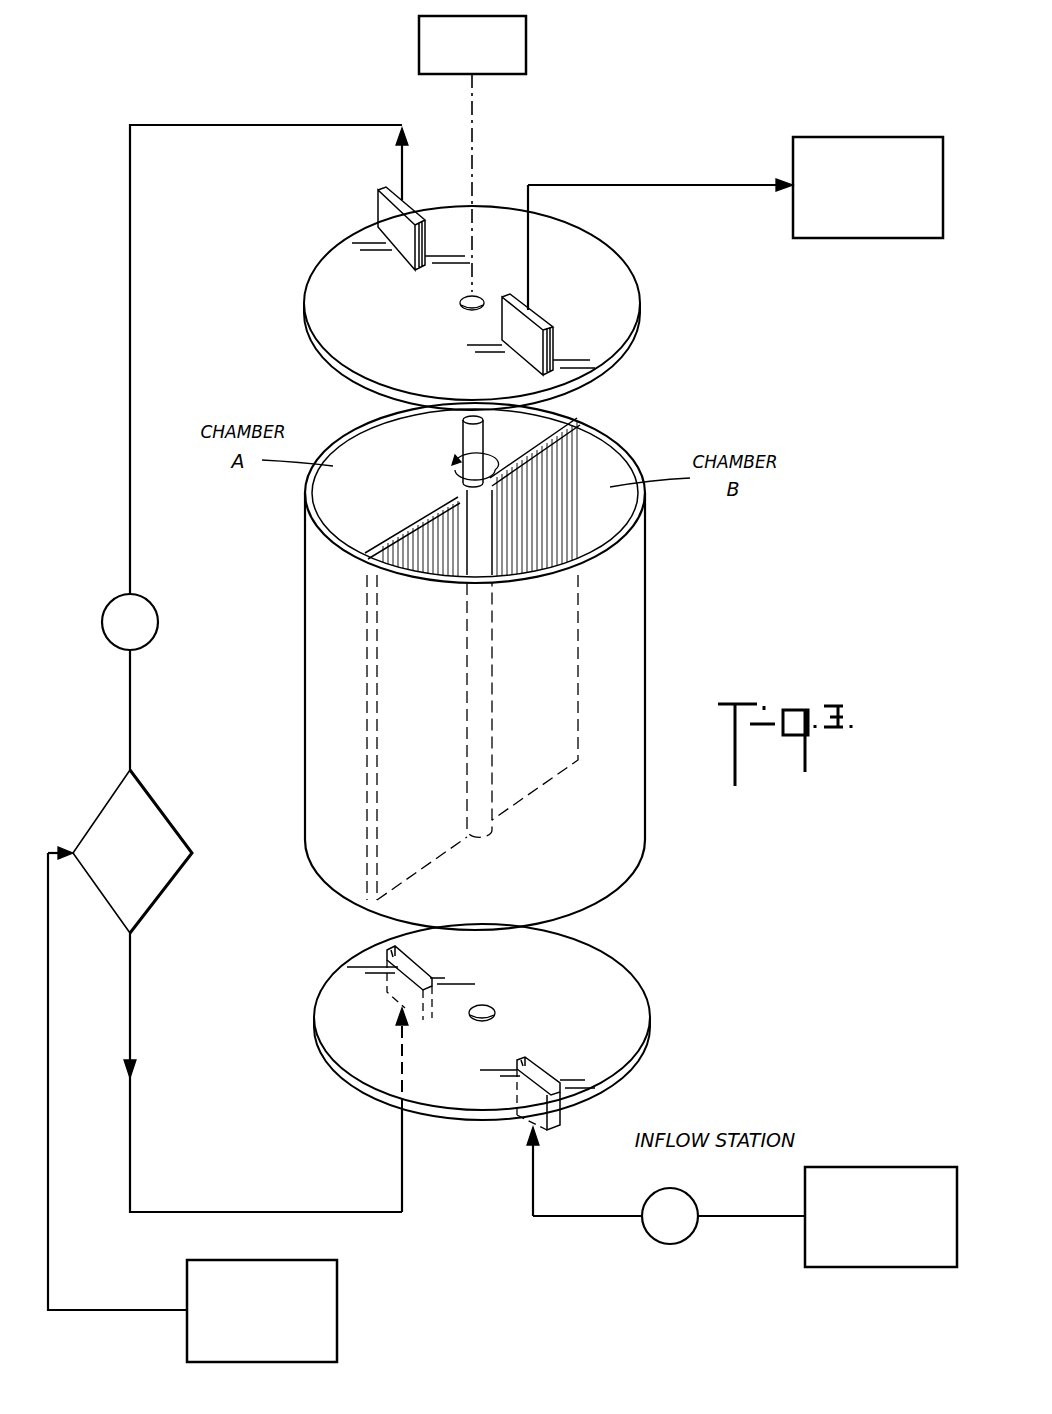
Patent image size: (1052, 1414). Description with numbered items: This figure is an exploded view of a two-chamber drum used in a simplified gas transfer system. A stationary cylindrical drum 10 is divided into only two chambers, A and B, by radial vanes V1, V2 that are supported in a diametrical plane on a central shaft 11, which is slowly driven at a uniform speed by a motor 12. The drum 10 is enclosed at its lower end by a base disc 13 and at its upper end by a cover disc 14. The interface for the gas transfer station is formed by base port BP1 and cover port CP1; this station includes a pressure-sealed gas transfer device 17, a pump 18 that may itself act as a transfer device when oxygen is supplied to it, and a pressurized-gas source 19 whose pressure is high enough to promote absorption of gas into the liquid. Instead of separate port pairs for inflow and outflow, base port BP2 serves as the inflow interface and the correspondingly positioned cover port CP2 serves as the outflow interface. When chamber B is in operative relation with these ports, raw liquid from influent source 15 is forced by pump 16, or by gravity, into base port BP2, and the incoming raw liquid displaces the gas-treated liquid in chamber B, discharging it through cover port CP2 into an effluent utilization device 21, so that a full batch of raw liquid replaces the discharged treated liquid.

The cylindrical drum 10 is at (635, 623).
The central shaft 11 is at (463, 440).
The motor 12 is at (526, 47).
The base disc 13 is at (652, 1018).
The cover disc 14 is at (640, 297).
The influent source 15 is at (893, 1166).
The pump 16 is at (690, 1238).
The gas transfer device 17 is at (192, 853).
The pump 18 is at (156, 637).
The pressurized-gas source 19 is at (337, 1266).
The effluent utilization device 21 is at (870, 135).
The cover port CP1 is at (410, 207).
The cover port CP2 is at (548, 330).
The base port BP1 is at (420, 965).
The base port BP2 is at (542, 1062).
The radial vane V1 is at (418, 512).
The radial vane V2 is at (522, 450).